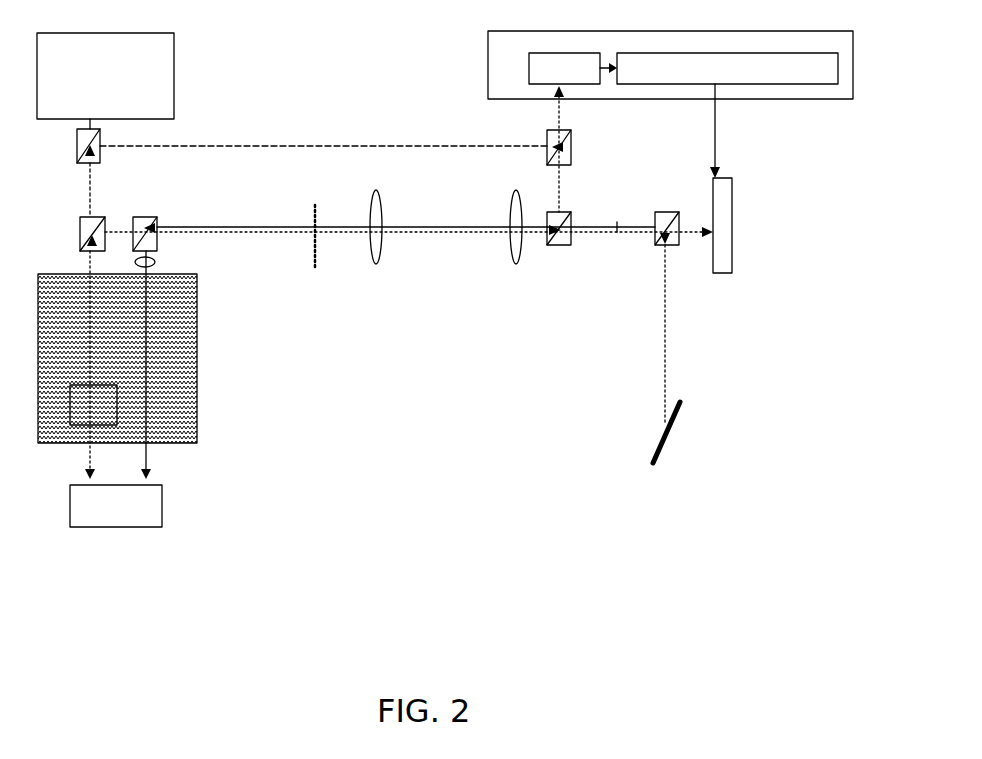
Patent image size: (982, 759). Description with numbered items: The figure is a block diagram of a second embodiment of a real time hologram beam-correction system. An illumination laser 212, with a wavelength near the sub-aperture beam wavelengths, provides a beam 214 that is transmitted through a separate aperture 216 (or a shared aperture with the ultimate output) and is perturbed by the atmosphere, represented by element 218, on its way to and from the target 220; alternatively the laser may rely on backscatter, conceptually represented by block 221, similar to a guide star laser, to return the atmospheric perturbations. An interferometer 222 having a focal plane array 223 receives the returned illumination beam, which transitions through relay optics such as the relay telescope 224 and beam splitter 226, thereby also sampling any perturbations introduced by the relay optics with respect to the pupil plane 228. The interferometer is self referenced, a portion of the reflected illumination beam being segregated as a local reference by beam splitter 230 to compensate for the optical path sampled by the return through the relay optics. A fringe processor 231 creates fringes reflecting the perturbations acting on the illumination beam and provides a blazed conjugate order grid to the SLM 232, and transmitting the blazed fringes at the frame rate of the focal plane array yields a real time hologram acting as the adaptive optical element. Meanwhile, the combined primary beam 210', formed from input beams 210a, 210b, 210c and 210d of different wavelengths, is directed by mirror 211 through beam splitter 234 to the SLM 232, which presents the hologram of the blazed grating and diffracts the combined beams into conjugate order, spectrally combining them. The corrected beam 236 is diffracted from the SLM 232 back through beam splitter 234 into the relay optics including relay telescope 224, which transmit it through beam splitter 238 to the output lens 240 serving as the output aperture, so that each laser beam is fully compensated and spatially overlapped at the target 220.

The illumination laser 212 is at (174, 88).
The beam splitter 230 is at (101, 131).
The beam 214 is at (91, 192).
The separate aperture 216 is at (80, 243).
The beam splitter 238 is at (141, 216).
The output lens 240 is at (155, 262).
The atmosphere 218 is at (197, 334).
The backscatter block 221 is at (117, 397).
The target 220 is at (162, 507).
The pupil plane 228 is at (315, 267).
The relay telescope 224 is at (421, 177).
The interferometer 222 is at (488, 58).
The focal plane array (FPA) 223 is at (529, 70).
The fringe processor 231 is at (753, 84).
The SLM 232 is at (726, 178).
The beam splitter 226 is at (556, 245).
The corrected beam 236 is at (617, 227).
The beam splitter 234 is at (666, 212).
The combined primary beam 210' is at (715, 335).
The mirror 211 is at (668, 433).
The input beam 210a is at (655, 428).
The input beam 210b is at (655, 428).
The input beam 210c is at (655, 428).
The input beam 210d is at (655, 428).